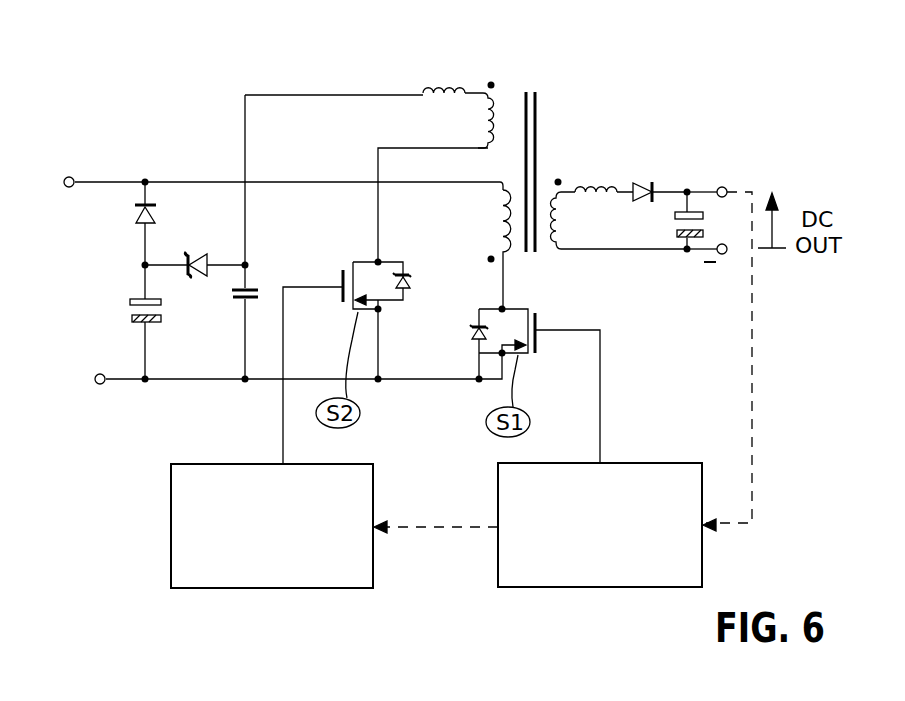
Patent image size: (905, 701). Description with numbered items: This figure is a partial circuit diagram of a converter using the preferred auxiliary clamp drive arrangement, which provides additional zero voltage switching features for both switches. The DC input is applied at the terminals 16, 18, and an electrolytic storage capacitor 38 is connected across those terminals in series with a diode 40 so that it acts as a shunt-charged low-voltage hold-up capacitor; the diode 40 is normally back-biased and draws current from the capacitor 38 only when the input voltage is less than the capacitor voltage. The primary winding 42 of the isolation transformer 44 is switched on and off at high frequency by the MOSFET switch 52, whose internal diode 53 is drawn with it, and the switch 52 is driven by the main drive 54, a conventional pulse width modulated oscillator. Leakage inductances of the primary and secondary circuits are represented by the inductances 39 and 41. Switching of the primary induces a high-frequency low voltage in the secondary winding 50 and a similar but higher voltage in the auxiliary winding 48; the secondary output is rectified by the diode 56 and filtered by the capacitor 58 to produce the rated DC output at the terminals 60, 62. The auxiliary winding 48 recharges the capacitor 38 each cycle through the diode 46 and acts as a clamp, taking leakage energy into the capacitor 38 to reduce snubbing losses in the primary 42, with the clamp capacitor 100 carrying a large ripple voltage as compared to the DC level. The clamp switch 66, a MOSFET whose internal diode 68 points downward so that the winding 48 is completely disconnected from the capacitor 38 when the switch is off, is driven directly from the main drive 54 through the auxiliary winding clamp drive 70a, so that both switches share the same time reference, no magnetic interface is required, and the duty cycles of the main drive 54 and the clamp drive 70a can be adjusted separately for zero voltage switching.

The input terminal 16 is at (68, 176).
The input terminal 18 is at (104, 373).
The storage capacitor 38 is at (128, 304).
The primary leakage inductance 39 is at (450, 88).
The diode 40 is at (135, 212).
The secondary leakage inductance 41 is at (618, 181).
The primary winding 42 is at (500, 220).
The isolation transformer 44 is at (546, 74).
The diode 46 is at (192, 256).
The auxiliary winding 48 is at (487, 110).
The secondary winding 50 is at (560, 210).
The MOSFET switch 52 is at (540, 345).
The zener diode of main switch 53 is at (470, 334).
The main drive 54 is at (663, 470).
The output diode 56 is at (650, 184).
The filter capacitor 58 is at (675, 235).
The output terminal 60 is at (726, 187).
The output terminal 62 is at (727, 256).
The clamp switch 66 is at (369, 260).
The internal diode 68 is at (411, 283).
The auxiliary winding clamp drive 70a is at (350, 585).
The clamp capacitor 100 is at (240, 300).